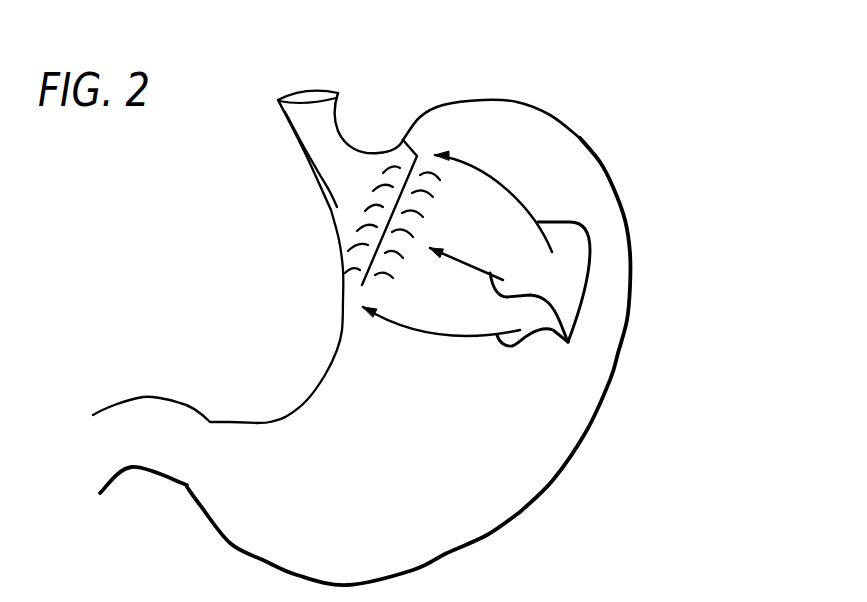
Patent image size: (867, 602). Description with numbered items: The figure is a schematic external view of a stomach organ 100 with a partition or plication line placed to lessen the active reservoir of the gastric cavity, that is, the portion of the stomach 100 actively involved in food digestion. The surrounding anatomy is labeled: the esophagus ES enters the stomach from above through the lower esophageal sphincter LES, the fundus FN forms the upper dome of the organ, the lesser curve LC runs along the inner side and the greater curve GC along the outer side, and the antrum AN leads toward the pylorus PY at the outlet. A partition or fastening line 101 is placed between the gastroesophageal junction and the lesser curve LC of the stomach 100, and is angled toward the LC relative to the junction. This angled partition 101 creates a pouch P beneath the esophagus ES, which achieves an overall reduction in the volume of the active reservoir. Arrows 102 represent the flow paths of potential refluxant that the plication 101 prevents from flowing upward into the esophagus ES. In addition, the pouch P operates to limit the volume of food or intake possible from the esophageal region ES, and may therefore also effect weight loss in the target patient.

The stomach organ 100 is at (667, 245).
The partition or fastening line 101 is at (405, 140).
The arrows 102 is at (476, 261).
The esophagus ES is at (339, 112).
The lower esophageal sphincter LES is at (304, 152).
The pouch P is at (369, 195).
The fundus FN is at (562, 123).
The lesser curve of the stomach LC is at (343, 290).
The pylorus PY is at (190, 407).
The greater curve of the stomach GC is at (587, 430).
The antrum of the stomach AN is at (487, 533).